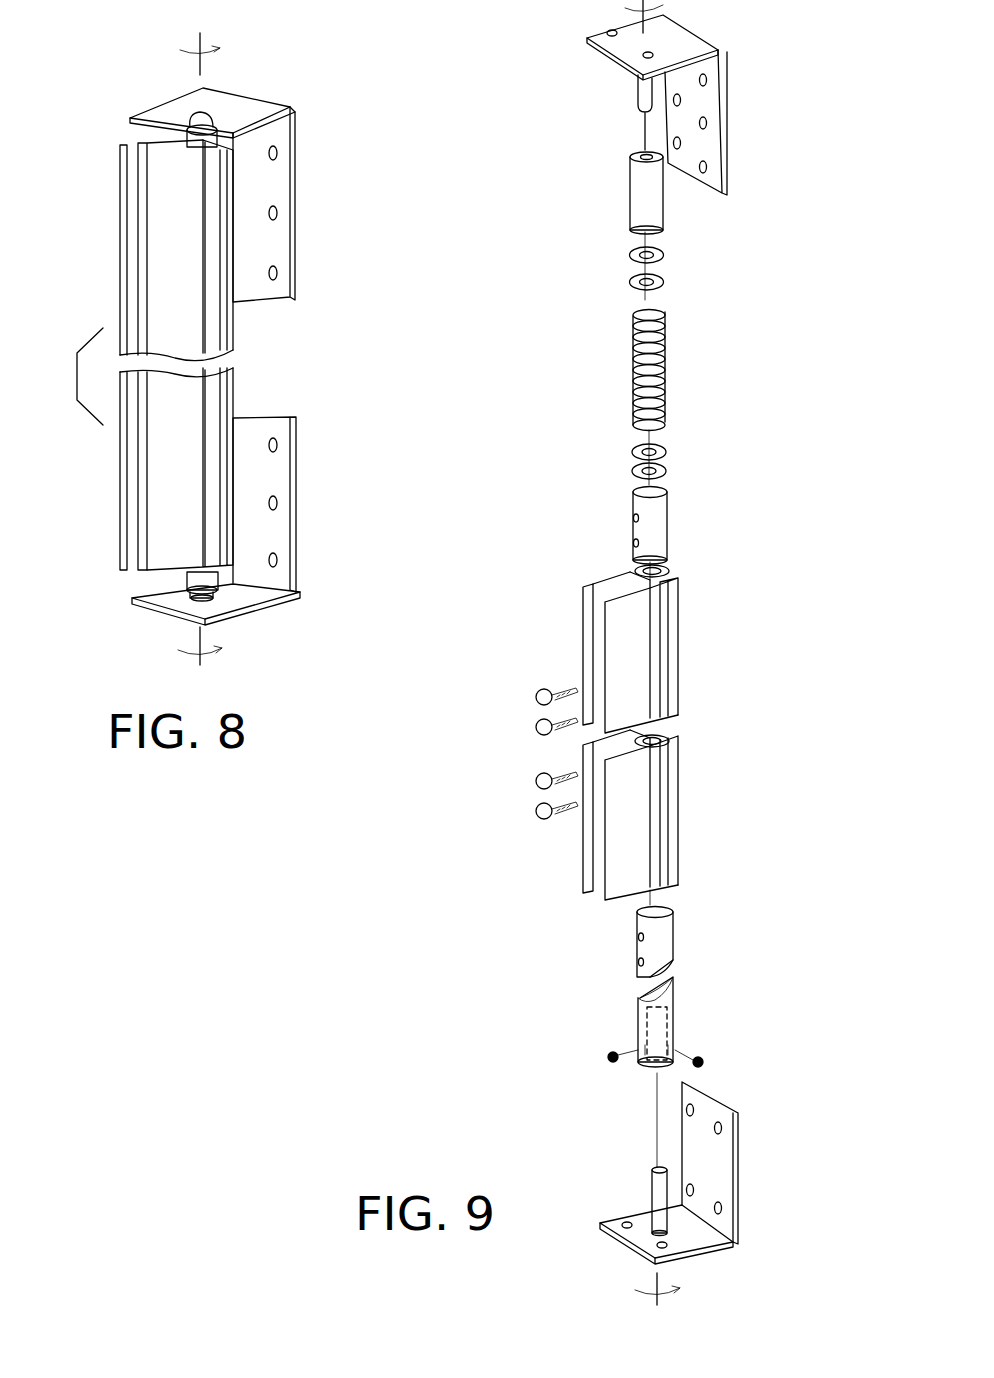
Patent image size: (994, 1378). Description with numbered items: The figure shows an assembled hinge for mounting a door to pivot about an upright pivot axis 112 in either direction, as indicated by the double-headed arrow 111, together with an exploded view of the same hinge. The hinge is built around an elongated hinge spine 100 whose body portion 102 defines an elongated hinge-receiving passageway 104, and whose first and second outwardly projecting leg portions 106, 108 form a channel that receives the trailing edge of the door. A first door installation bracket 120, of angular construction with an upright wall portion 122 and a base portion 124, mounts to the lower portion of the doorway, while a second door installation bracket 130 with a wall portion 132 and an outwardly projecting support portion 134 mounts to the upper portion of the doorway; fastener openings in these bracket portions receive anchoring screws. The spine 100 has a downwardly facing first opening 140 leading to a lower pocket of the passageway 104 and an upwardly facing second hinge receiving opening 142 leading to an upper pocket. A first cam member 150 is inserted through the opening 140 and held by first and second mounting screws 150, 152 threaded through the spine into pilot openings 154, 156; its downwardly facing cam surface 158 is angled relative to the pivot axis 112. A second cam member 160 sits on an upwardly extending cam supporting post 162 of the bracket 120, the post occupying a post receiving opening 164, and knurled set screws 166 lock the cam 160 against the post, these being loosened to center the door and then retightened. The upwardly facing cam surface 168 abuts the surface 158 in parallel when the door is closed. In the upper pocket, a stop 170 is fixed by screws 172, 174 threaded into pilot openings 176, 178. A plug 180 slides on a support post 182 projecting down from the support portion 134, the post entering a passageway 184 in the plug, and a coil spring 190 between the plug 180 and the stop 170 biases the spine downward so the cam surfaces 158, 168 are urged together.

In FIG. 8, the hinge spine 100 is at (175, 355).
In FIG. 9, the hinge spine 100 is at (636, 724).
In FIG. 8, the body portion 102 is at (213, 333).
In FIG. 9, the body portion 102 is at (677, 620).
In FIG. 9, the hinge-receiving passageway 104 is at (632, 573).
In FIG. 8, the first leg portion 106 is at (132, 498).
In FIG. 9, the first leg portion 106 is at (593, 605).
In FIG. 8, the second leg portion 108 is at (157, 530).
In FIG. 9, the second leg portion 108 is at (618, 636).
In FIG. 8, the double-headed arrow 111 is at (217, 655).
In FIG. 9, the double-headed arrow 111 is at (673, 1293).
In FIG. 8, the pivot axis 112 is at (207, 637).
In FIG. 9, the pivot axis 112 is at (660, 1280).
In FIG. 8, the first door installation bracket 120 is at (257, 542).
In FIG. 9, the first door installation bracket 120 is at (711, 1173).
In FIG. 8, the upright wall portion 122 is at (268, 468).
In FIG. 9, the upright wall portion 122 is at (717, 1170).
In FIG. 8, the base portion 124 is at (243, 597).
In FIG. 9, the base portion 124 is at (690, 1237).
In FIG. 8, the second door installation bracket 130 is at (302, 101).
In FIG. 9, the second door installation bracket 130 is at (738, 115).
In FIG. 8, the wall portion 132 is at (262, 197).
In FIG. 9, the wall portion 132 is at (710, 147).
In FIG. 8, the support portion 134 is at (226, 116).
In FIG. 9, the support portion 134 is at (670, 42).
In FIG. 9, the first opening 140 is at (660, 887).
In FIG. 9, the second hinge receiving opening 142 is at (668, 572).
In FIG. 9, the first cam member 150 is at (533, 790).
In FIG. 9, the fastener screw 152 is at (533, 820).
In FIG. 9, the pilot opening 154 is at (638, 937).
In FIG. 9, the pilot opening 156 is at (638, 962).
In FIG. 9, the cam surface 158 is at (663, 963).
In FIG. 8, the second cam member 160 is at (193, 577).
In FIG. 9, the second cam member 160 is at (673, 1007).
In FIG. 8, the cam supporting post 162 is at (192, 603).
In FIG. 9, the cam supporting post 162 is at (650, 1187).
In FIG. 9, the post receiving opening 164 is at (652, 1073).
In FIG. 9, the set screws 166 is at (608, 1055).
In FIG. 9, the cam surface 168 is at (643, 990).
In FIG. 9, the stop 170 is at (663, 528).
In FIG. 9, the screw 172 is at (533, 705).
In FIG. 9, the screw 174 is at (533, 735).
In FIG. 9, the pilot opening 176 is at (633, 518).
In FIG. 9, the pilot opening 178 is at (633, 545).
In FIG. 8, the plug 180 is at (190, 137).
In FIG. 9, the plug 180 is at (640, 197).
In FIG. 8, the support post 182 is at (192, 115).
In FIG. 9, the support post 182 is at (642, 88).
In FIG. 9, the passageway 184 is at (638, 148).
In FIG. 9, the coil spring 190 is at (667, 387).